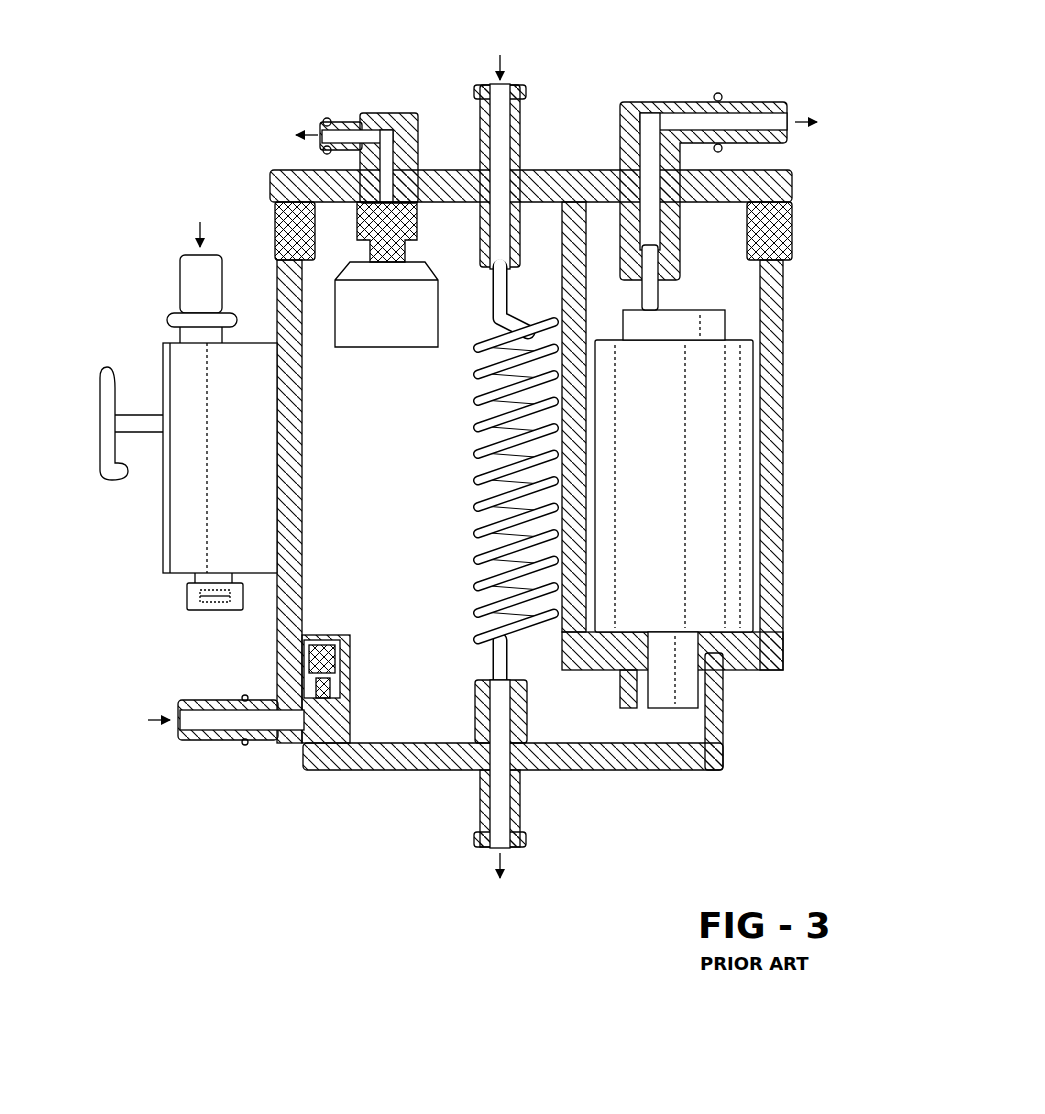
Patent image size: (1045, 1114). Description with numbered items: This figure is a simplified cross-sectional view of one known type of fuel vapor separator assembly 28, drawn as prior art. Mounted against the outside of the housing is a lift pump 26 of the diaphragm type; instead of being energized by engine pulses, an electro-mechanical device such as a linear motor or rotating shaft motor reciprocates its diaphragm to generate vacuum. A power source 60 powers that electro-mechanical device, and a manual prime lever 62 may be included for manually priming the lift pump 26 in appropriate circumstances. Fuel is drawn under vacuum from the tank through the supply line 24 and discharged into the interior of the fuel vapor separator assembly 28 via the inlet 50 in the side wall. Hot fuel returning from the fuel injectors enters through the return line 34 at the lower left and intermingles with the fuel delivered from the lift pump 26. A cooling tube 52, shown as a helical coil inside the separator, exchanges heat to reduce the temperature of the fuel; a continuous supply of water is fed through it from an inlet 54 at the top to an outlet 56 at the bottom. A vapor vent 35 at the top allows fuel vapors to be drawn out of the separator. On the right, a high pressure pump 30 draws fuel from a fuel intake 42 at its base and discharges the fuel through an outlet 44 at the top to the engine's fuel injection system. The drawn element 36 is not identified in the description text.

The supply line 24 is at (186, 270).
The lift pump 26 is at (158, 553).
The fuel vapor separator assembly 28 is at (806, 541).
The high pressure pump 30 is at (674, 476).
The return line 34 is at (212, 742).
The vapor vent 35 is at (408, 228).
The valve 36 is at (386, 304).
The fuel intake 42 is at (690, 698).
The outlet 44 is at (773, 100).
The inlet 50 is at (302, 548).
The cooling tube 52 is at (473, 475).
The inlet 54 is at (523, 92).
The outlet 56 is at (522, 835).
The power source 60 is at (190, 597).
The manual prime lever 62 is at (118, 368).